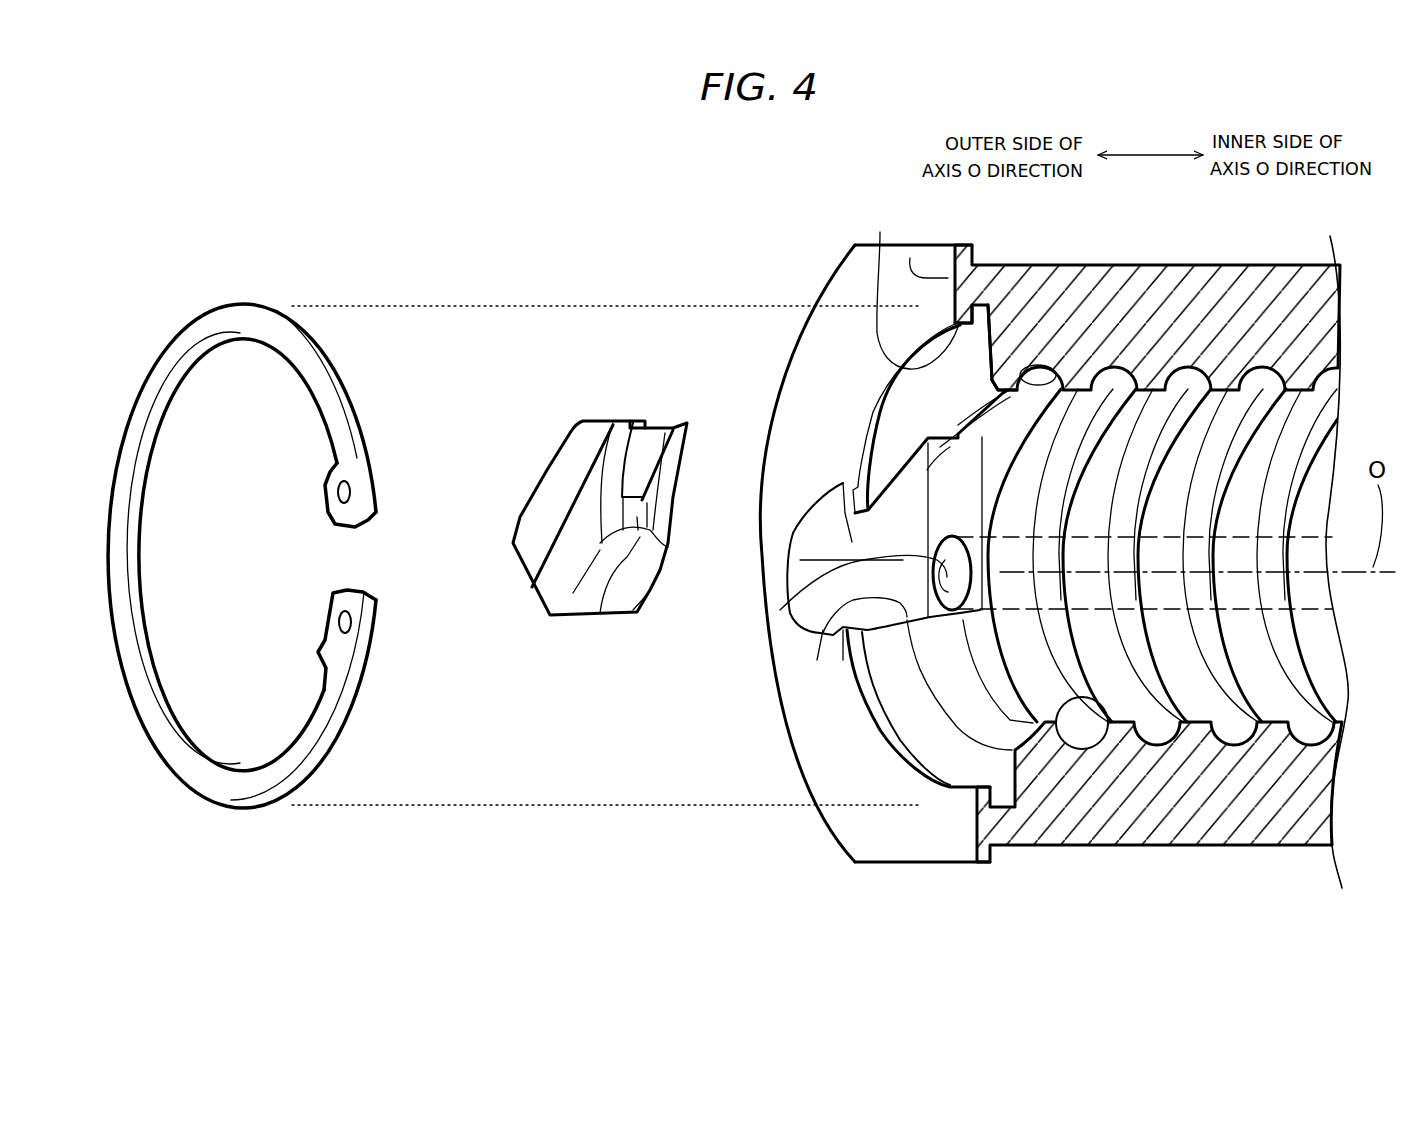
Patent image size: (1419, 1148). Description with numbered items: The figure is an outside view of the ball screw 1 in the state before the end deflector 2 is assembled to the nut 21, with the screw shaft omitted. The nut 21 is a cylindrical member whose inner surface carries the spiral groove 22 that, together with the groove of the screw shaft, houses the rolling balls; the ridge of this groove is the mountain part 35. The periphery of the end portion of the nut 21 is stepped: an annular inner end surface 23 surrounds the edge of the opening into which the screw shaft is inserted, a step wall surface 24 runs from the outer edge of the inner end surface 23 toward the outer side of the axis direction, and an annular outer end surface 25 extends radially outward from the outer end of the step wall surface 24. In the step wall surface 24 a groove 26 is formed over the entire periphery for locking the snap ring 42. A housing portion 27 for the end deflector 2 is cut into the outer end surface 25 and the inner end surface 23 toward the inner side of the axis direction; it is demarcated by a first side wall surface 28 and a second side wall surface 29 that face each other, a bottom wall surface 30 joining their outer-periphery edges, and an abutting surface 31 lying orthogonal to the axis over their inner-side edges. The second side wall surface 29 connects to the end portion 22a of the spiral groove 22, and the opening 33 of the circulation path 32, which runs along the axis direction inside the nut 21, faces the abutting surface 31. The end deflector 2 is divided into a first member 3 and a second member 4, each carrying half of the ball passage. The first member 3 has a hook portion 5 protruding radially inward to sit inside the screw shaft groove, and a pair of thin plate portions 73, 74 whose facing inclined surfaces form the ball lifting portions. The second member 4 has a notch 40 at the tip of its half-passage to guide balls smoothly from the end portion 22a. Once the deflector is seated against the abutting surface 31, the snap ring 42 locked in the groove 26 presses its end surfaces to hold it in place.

The ball screw 1 is at (723, 838).
The end deflector 2 is at (463, 572).
The first member 3 is at (550, 588).
The second member 4 is at (533, 537).
The hook portion 5 is at (640, 530).
The nut 21 is at (1050, 813).
The spiral groove 22 is at (1074, 300).
The end portion of the spiral groove 22a is at (948, 440).
The inner end surface 23 is at (1015, 340).
The step wall surface 24 is at (880, 262).
The outer end surface 25 is at (910, 258).
The groove 26 is at (986, 360).
The housing portion 27 is at (828, 497).
The first side wall surface 28 is at (833, 627).
The second side wall surface 29 is at (837, 490).
The bottom wall surface 30 is at (813, 575).
The abutting surface 31 is at (957, 513).
The circulation path 32 is at (1313, 603).
The opening 33 is at (815, 628).
The mountain part 35 is at (1098, 750).
The notch 40 is at (653, 430).
The snap ring 42 is at (197, 780).
The thin plate portion 73 is at (633, 430).
The thin plate portion 74 is at (683, 433).